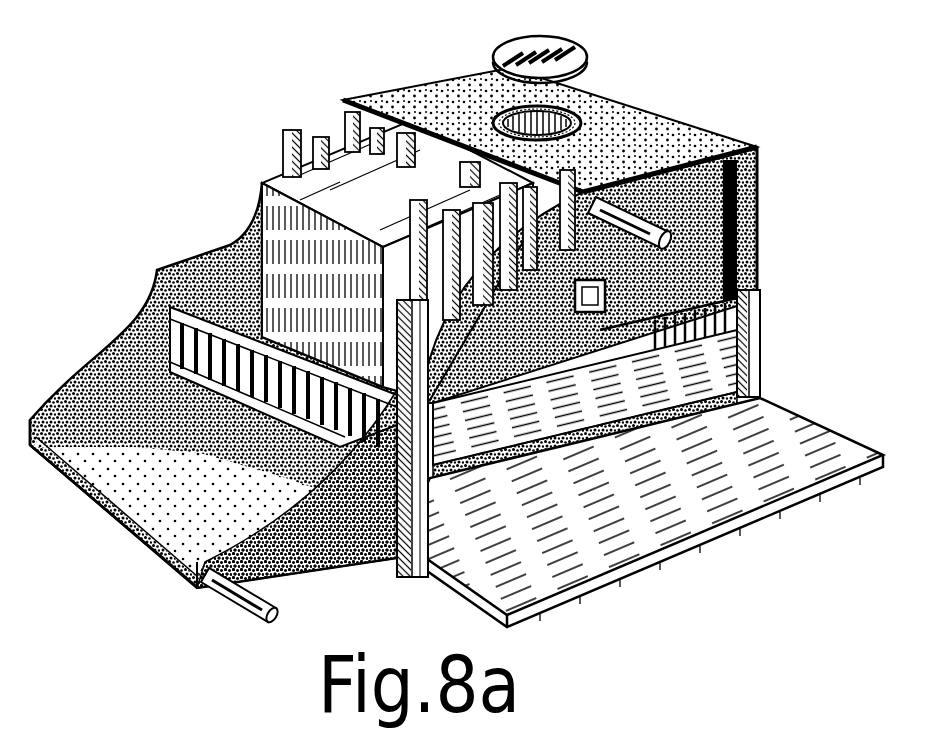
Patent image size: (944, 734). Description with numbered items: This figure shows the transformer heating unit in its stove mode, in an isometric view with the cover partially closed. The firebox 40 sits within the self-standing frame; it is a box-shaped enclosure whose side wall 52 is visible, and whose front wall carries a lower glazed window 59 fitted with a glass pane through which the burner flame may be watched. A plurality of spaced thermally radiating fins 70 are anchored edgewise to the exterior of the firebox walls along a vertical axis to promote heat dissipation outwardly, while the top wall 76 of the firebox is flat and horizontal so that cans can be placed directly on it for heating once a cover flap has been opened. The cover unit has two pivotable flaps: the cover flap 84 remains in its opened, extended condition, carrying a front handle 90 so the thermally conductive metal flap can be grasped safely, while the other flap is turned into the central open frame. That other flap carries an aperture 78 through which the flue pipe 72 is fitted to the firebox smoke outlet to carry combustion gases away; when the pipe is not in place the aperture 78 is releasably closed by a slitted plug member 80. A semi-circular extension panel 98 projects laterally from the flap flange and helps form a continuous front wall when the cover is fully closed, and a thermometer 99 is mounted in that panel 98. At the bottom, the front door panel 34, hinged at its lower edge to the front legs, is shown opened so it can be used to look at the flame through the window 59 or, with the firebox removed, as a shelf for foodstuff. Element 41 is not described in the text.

The front door panel 34 is at (782, 440).
The firebox 40 is at (302, 188).
The support post 41 is at (750, 322).
The side wall 52 is at (277, 217).
The lower glazed window 59 is at (752, 362).
The thermally radiating fins 70 is at (325, 133).
The flue pipe 72 is at (578, 102).
The top wall 76 is at (357, 183).
The aperture 78 is at (583, 140).
The slitted plug member 80 is at (585, 57).
The cover flap 84 is at (140, 508).
The front handle 90 is at (647, 206).
The extension panel 98 is at (712, 185).
The thermometer 99 is at (578, 352).